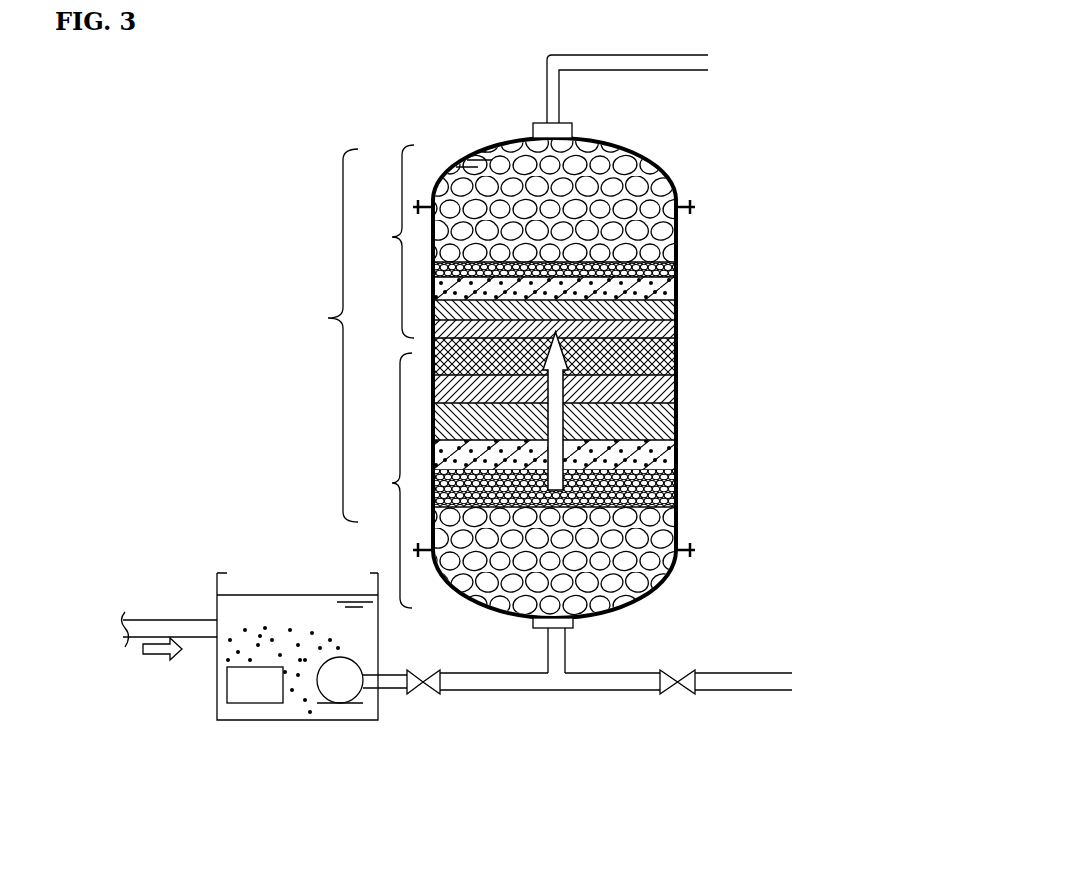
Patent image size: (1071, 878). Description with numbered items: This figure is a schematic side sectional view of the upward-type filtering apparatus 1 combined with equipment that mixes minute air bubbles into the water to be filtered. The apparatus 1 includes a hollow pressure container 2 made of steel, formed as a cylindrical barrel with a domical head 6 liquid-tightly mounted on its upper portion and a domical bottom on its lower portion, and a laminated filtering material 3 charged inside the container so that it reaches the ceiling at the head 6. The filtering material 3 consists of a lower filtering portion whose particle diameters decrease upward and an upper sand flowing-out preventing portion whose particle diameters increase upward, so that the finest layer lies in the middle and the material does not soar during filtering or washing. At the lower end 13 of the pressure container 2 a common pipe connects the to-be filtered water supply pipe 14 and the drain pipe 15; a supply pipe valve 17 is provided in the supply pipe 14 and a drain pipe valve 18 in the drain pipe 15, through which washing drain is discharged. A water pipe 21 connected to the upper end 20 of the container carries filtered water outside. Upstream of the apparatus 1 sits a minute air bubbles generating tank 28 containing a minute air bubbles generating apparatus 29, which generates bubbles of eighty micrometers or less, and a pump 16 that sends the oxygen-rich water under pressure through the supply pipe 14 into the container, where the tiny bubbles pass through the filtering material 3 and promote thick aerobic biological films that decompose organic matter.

The upward-type filtering apparatus 1 is at (233, 170).
The pressure container 2 is at (678, 292).
The filtering material 3 is at (330, 335).
The domical head 6 is at (657, 167).
The lower end 13 is at (577, 628).
The to-be filtered water supply pipe 14 is at (468, 682).
The drain pipe 15 is at (760, 673).
The pump 16 is at (340, 703).
The supply pipe valve 17 is at (407, 673).
The drain pipe valve 18 is at (693, 672).
The upper end 20 is at (533, 127).
The water pipe 21 is at (635, 65).
The minute air bubbles generating tank 28 is at (263, 602).
The minute air bubbles generating apparatus 29 is at (247, 703).